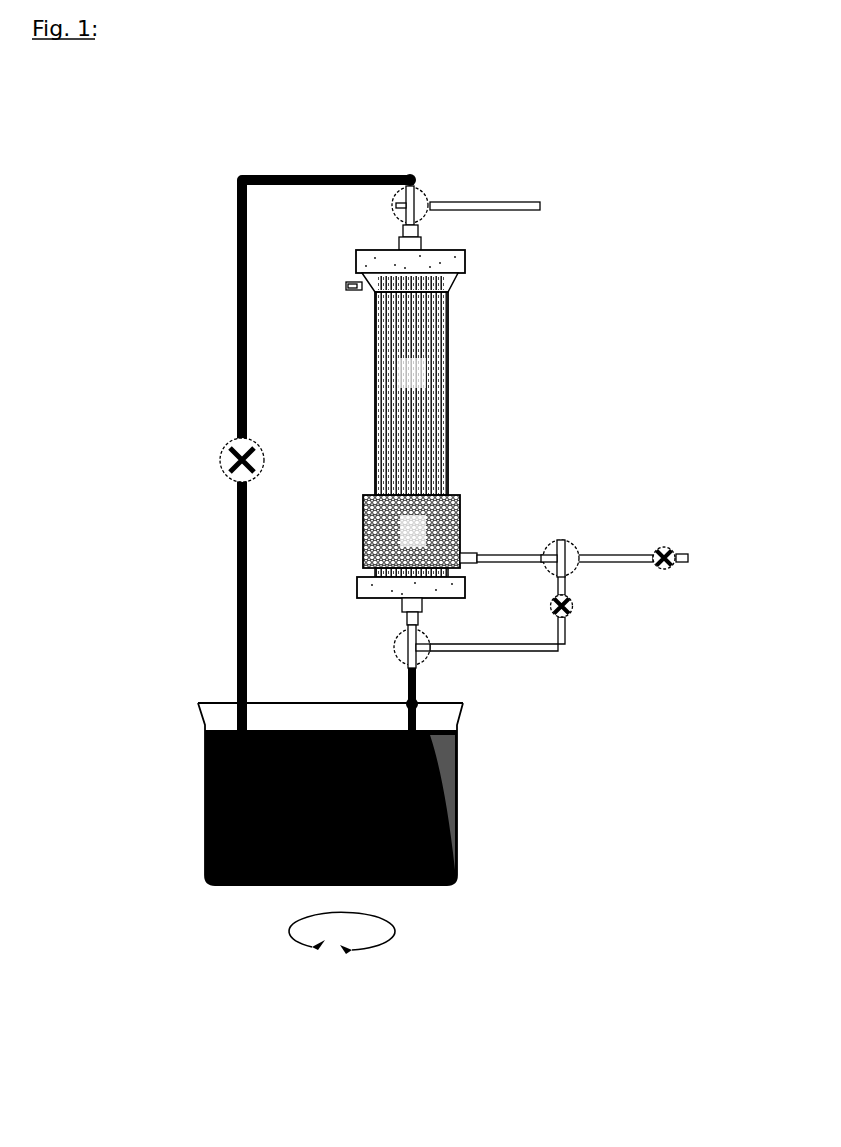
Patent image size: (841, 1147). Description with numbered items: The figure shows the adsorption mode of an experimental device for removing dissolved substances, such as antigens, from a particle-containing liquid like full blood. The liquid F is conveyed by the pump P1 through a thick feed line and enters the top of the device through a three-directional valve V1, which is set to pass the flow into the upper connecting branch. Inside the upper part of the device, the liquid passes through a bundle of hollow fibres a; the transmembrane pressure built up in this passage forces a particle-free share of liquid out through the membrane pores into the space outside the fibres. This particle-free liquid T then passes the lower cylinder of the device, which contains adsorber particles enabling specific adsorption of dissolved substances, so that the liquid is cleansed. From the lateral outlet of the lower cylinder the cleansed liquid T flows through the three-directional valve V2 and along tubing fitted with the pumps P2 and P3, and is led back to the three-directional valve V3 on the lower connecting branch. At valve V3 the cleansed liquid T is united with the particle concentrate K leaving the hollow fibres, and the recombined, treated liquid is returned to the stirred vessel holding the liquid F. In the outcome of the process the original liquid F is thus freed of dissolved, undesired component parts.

The liquid containing particles F is at (343, 165).
The three-directional valve V1 is at (449, 179).
The hollow fibres a is at (448, 361).
The pump P1 is at (198, 460).
The particle-free liquid T is at (487, 547).
The three-directional valve V2 is at (580, 536).
The pump P2 is at (586, 607).
The pump P3 is at (688, 582).
The three-directional valve V3 is at (391, 635).
The particle concentrate K is at (392, 653).